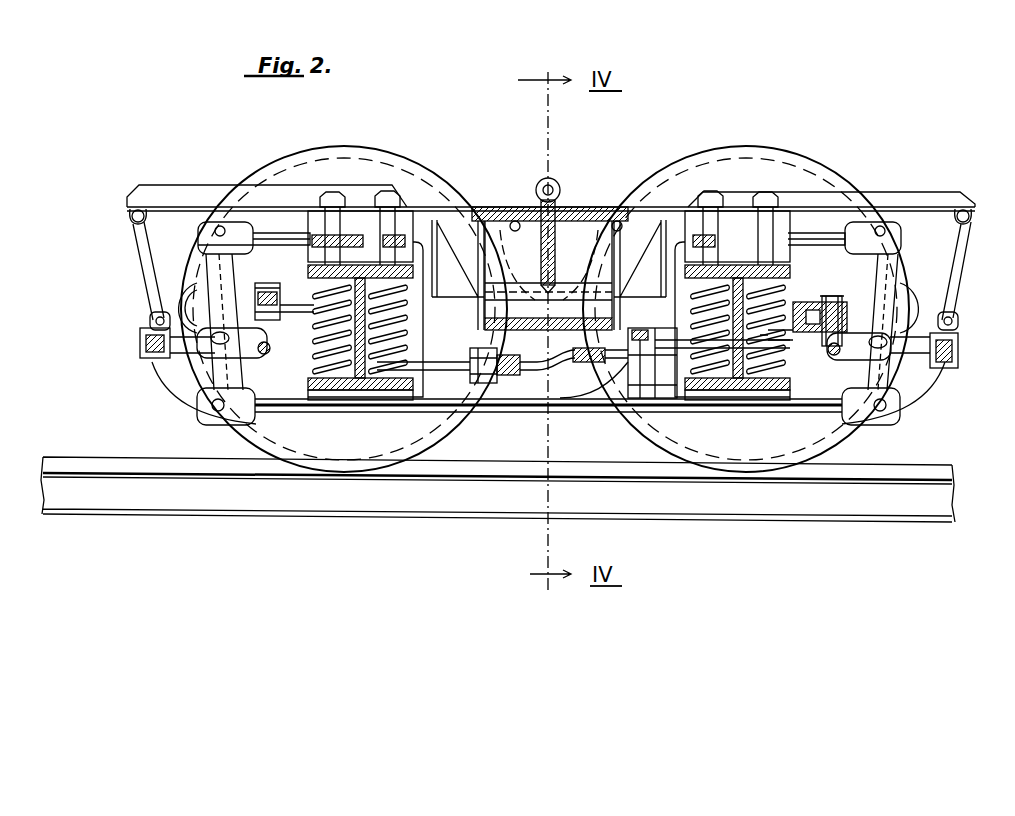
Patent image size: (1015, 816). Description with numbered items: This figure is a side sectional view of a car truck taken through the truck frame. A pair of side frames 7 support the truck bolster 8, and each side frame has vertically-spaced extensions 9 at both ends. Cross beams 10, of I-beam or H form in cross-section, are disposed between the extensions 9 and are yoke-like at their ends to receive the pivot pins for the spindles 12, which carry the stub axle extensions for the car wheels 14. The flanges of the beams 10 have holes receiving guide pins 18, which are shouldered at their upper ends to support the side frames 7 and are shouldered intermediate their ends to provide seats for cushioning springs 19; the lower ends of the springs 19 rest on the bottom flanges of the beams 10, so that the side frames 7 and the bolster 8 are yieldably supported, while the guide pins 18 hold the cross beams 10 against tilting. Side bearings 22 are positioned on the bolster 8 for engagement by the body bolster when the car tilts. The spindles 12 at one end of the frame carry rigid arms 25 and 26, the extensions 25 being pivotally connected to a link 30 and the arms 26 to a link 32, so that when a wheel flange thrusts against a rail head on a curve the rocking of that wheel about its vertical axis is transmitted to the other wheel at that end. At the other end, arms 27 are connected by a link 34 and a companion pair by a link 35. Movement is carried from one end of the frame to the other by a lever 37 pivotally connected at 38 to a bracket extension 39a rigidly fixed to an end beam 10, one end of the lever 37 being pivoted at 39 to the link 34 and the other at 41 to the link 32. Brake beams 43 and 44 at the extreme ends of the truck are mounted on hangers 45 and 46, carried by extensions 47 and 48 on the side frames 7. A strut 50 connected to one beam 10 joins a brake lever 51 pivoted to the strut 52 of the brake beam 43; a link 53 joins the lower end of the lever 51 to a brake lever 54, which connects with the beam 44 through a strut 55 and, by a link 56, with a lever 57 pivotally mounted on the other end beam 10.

The side frames 7 is at (430, 272).
The truck bolster 8 is at (576, 238).
The extensions 9 is at (322, 222).
The cross beams 10 is at (308, 270).
The spindles 12 is at (314, 332).
The car wheels 14 is at (343, 472).
The guide pins 18 is at (396, 238).
The cushioning springs 19 is at (314, 366).
The side bearings 22 is at (556, 182).
The arms or extensions 25 is at (293, 304).
The arms 26 is at (457, 368).
The arms 27 is at (788, 320).
The link 30 is at (258, 289).
The link 32 is at (498, 386).
The link 34 is at (848, 318).
The link 35 is at (585, 380).
The lever 37 is at (670, 360).
The pivotal connection 38 is at (648, 350).
The pivotal connection 39 is at (834, 296).
The bracket extension 39a is at (620, 398).
The pivotal connection 41 is at (520, 380).
The brake beam 43 is at (958, 344).
The brake beam 44 is at (140, 342).
The hanger 45 is at (956, 262).
The hanger 46 is at (138, 250).
The extension 47 is at (950, 196).
The extension 48 is at (176, 188).
The strut or link 50 is at (820, 244).
The brake lever 51 is at (880, 280).
The strut 52 is at (924, 352).
The link 53 is at (258, 420).
The brake lever 54 is at (200, 262).
The strut 55 is at (175, 352).
The link 56 is at (276, 236).
The lever 57 is at (355, 238).